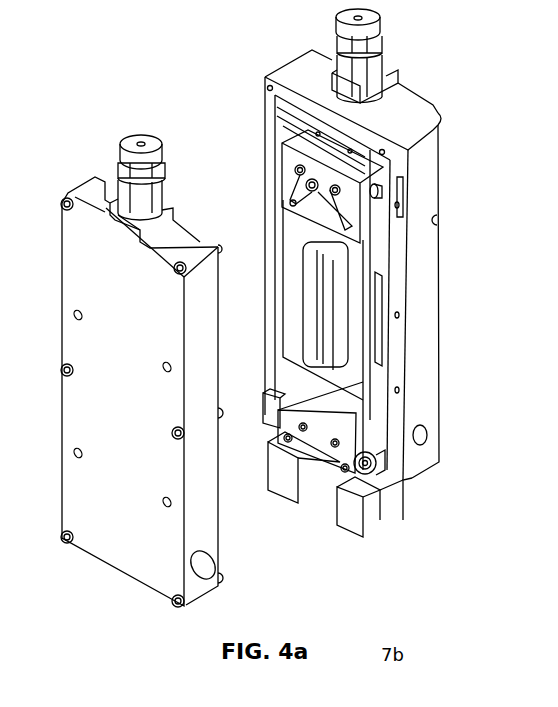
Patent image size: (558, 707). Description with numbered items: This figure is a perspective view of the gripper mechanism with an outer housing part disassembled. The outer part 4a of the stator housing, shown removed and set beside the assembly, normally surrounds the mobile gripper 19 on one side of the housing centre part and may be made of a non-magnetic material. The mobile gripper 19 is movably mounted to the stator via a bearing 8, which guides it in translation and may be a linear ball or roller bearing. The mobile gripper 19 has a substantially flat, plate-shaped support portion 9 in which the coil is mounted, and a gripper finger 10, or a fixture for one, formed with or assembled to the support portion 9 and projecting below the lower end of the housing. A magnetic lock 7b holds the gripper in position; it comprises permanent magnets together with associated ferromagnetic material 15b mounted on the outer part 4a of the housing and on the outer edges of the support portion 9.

The outer part 4a is at (379, 303).
The bearing 8 is at (377, 193).
The mobile gripper 19 is at (374, 302).
The magnetic lock 7b is at (372, 464).
The ferromagnetic material 15b is at (266, 416).
The support portion 9 is at (333, 375).
The gripper finger 10 is at (318, 478).